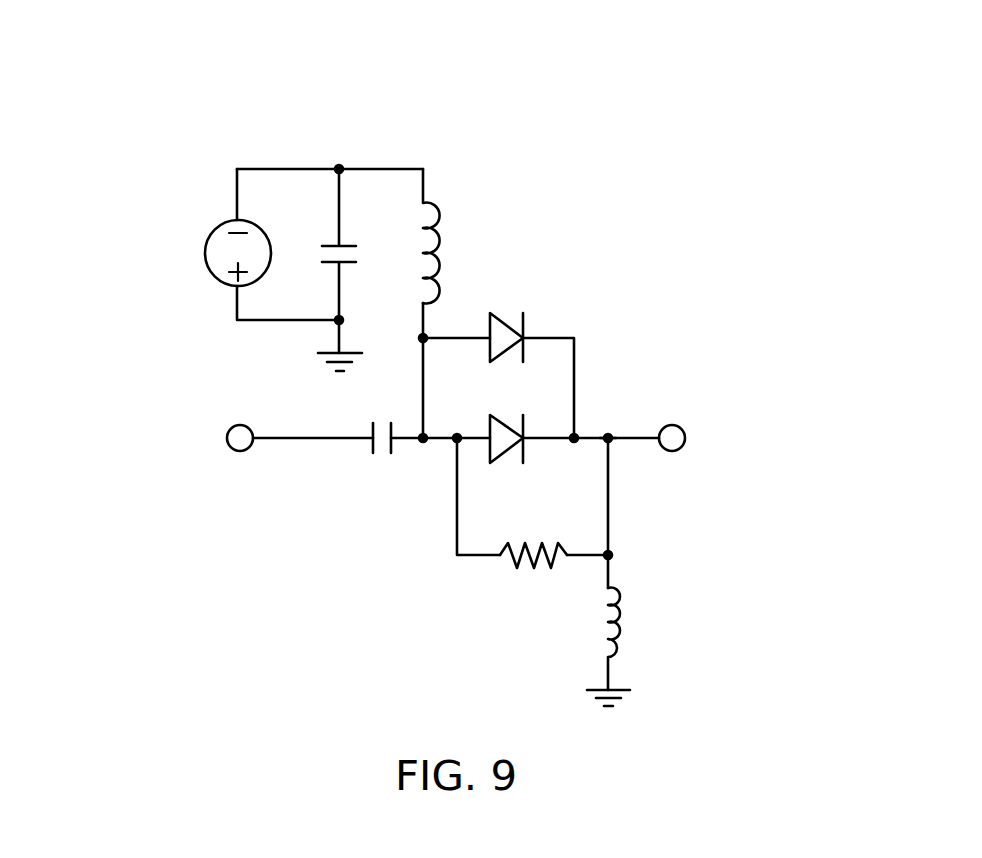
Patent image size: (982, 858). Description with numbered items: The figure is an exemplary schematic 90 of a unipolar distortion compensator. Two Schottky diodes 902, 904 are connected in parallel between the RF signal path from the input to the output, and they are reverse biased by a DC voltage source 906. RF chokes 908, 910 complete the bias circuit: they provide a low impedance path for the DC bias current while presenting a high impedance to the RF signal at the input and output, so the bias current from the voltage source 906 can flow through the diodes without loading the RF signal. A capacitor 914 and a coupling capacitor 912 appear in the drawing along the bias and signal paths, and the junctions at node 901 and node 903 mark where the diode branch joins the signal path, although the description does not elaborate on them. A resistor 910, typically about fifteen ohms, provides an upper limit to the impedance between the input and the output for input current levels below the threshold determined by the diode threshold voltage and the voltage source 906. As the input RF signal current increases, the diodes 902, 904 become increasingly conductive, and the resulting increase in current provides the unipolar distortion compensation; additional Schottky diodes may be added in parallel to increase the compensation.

The exemplary schematic 90 is at (493, 110).
The DC voltage source 906 is at (205, 250).
The capacitor 914 is at (325, 246).
The RF choke / resistor 910 is at (445, 243).
The Schottky diode 902 is at (535, 318).
The Schottky diode 904 is at (512, 455).
The node 901 is at (423, 440).
The node 903 is at (618, 438).
The capacitor 912 is at (372, 450).
The RF choke 908 is at (618, 617).